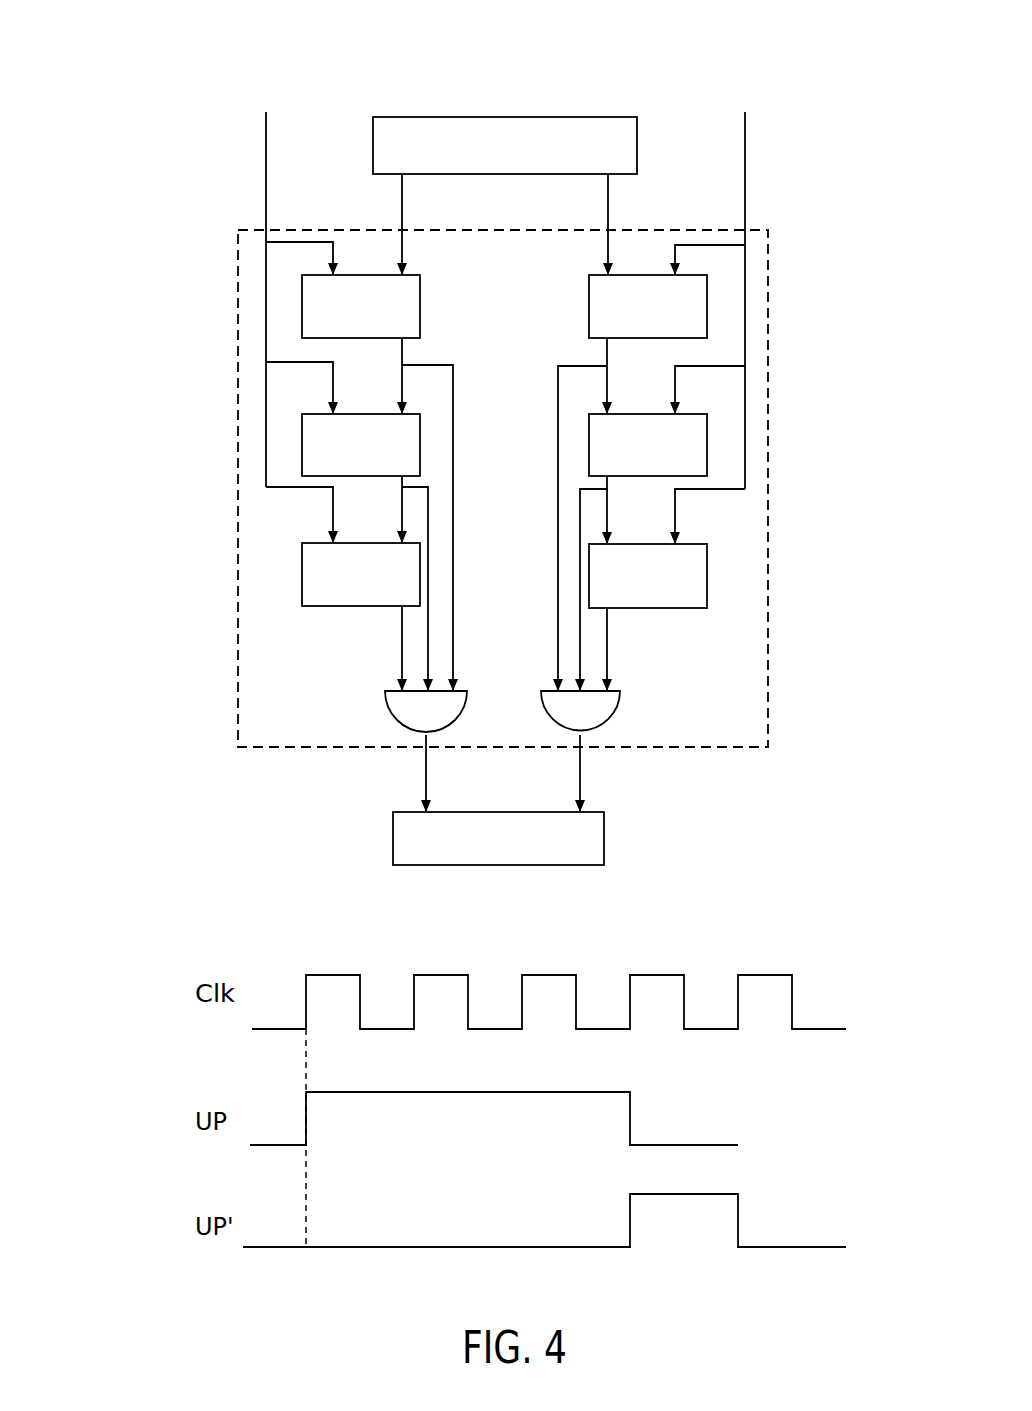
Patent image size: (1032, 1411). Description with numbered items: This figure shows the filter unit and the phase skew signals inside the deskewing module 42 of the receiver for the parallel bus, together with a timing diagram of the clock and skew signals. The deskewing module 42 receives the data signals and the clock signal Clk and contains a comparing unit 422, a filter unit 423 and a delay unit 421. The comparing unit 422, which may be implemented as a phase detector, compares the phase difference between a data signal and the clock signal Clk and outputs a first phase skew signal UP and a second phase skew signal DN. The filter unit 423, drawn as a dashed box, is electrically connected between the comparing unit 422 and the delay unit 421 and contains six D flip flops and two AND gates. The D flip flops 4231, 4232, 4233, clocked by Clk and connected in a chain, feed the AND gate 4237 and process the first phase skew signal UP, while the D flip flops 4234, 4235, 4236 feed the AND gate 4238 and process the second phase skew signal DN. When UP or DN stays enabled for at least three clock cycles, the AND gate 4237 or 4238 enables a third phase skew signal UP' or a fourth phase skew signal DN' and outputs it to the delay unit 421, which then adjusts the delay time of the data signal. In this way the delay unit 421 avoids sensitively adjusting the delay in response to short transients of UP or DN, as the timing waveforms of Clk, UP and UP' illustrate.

The deskewing module 42 is at (153, 88).
The delay unit 421 is at (598, 853).
The comparing unit 422 is at (480, 128).
The filter unit 423 is at (729, 649).
The D flip flop 4231 is at (699, 307).
The D flip flop 4232 is at (699, 452).
The D flip flop 4233 is at (699, 580).
The D flip flop 4234 is at (312, 313).
The D flip flop 4235 is at (312, 448).
The D flip flop 4236 is at (312, 573).
The AND gate 4237 is at (605, 712).
The AND gate 4238 is at (398, 706).